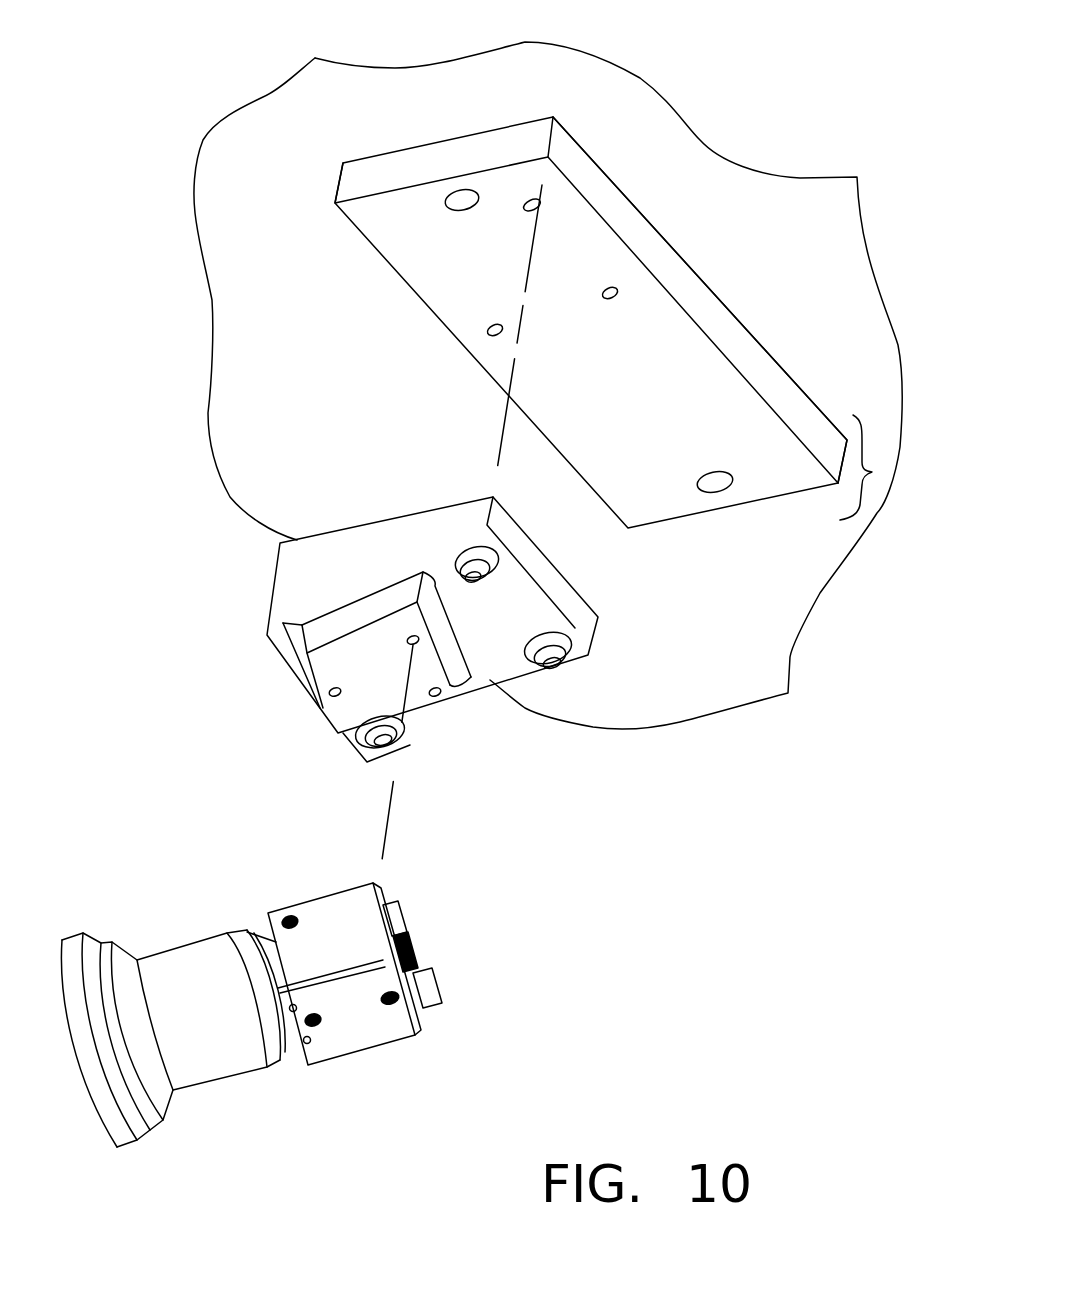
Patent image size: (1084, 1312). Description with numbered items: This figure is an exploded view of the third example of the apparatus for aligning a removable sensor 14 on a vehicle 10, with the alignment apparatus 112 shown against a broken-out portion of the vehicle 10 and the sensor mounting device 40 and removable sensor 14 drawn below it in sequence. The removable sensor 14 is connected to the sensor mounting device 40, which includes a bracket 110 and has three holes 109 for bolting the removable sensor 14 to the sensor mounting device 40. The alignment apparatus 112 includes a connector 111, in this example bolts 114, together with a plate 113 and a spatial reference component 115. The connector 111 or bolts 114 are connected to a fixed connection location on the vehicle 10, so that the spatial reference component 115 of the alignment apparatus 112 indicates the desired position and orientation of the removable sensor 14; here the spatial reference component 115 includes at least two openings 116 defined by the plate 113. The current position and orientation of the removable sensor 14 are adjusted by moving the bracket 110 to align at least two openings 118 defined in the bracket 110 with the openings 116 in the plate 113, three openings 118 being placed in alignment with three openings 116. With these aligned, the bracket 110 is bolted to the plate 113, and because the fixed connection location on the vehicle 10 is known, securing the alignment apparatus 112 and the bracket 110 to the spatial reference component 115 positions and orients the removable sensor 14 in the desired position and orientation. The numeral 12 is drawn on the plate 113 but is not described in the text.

The vehicle 10 is at (603, 95).
The mounting plate 12 is at (371, 114).
The removable sensor 14 is at (289, 1076).
The sensor mounting device 40 is at (448, 760).
The holes 109 is at (418, 636).
The bracket 110 is at (453, 603).
The connector 111 is at (438, 190).
The alignment apparatus 112 is at (868, 478).
The plate 113 is at (727, 338).
The bolts 114 is at (460, 190).
The spatial reference component 115 is at (442, 259).
The openings 116 is at (531, 200).
The openings 118 is at (478, 572).